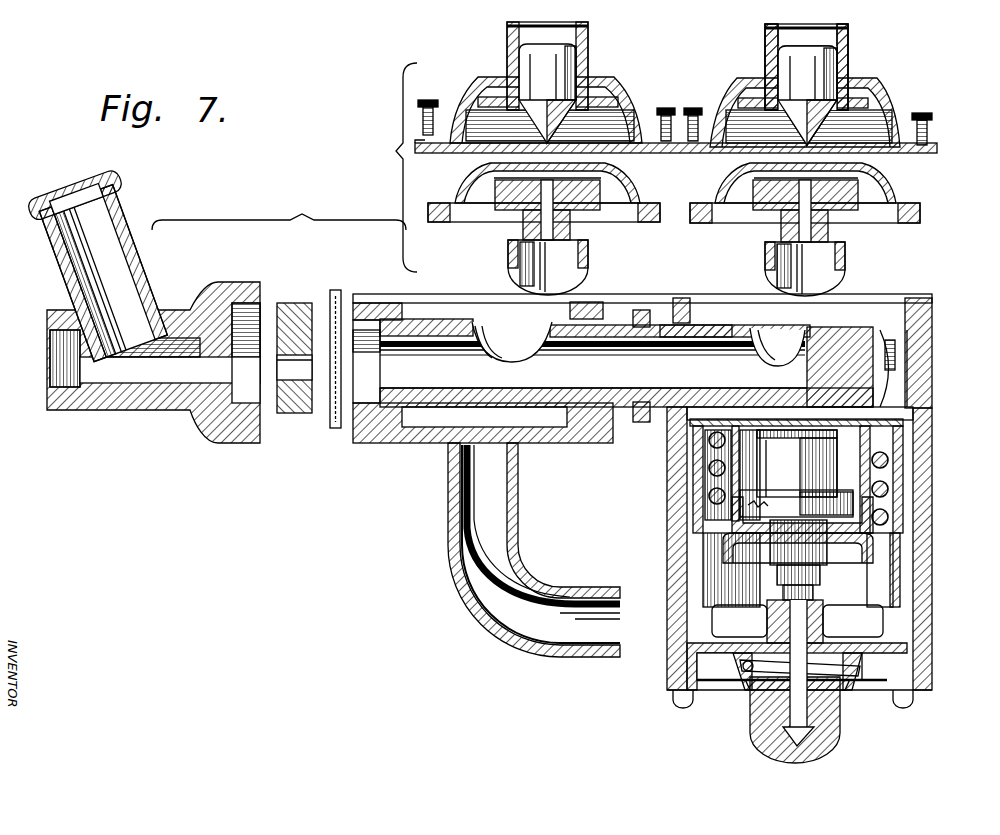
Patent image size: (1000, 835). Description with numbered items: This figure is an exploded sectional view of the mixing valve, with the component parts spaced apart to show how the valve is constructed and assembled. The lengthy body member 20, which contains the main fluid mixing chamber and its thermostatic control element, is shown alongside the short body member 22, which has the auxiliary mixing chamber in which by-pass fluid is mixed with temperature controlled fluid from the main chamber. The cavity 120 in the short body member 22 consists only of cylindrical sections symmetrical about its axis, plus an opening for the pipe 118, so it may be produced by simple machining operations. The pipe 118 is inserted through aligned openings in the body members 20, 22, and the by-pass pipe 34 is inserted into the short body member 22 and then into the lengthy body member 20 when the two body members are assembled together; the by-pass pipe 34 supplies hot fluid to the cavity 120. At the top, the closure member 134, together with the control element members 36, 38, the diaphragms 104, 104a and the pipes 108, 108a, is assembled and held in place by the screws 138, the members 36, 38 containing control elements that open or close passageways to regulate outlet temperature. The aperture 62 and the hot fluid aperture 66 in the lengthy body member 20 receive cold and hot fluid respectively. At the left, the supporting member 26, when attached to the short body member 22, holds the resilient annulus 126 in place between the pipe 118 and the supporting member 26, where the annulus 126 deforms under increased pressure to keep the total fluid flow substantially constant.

The lengthy body member 20 is at (934, 312).
The short body member 22 is at (355, 300).
The supporting member 26 is at (150, 395).
The by-pass pipe 34 is at (457, 553).
The control element member 36 is at (850, 40).
The control element member 38 is at (592, 52).
The aperture 62 is at (920, 484).
The hot fluid aperture 66 is at (912, 620).
The diaphragm 104 is at (892, 190).
The diaphragm 104a is at (628, 186).
The pipe 108 is at (848, 262).
The pipe 108a is at (505, 262).
The pipe 118 is at (430, 318).
The cavity 120 is at (556, 324).
The resilient annulus 126 is at (290, 300).
The closure member 134 is at (878, 88).
The screws 138 is at (432, 98).